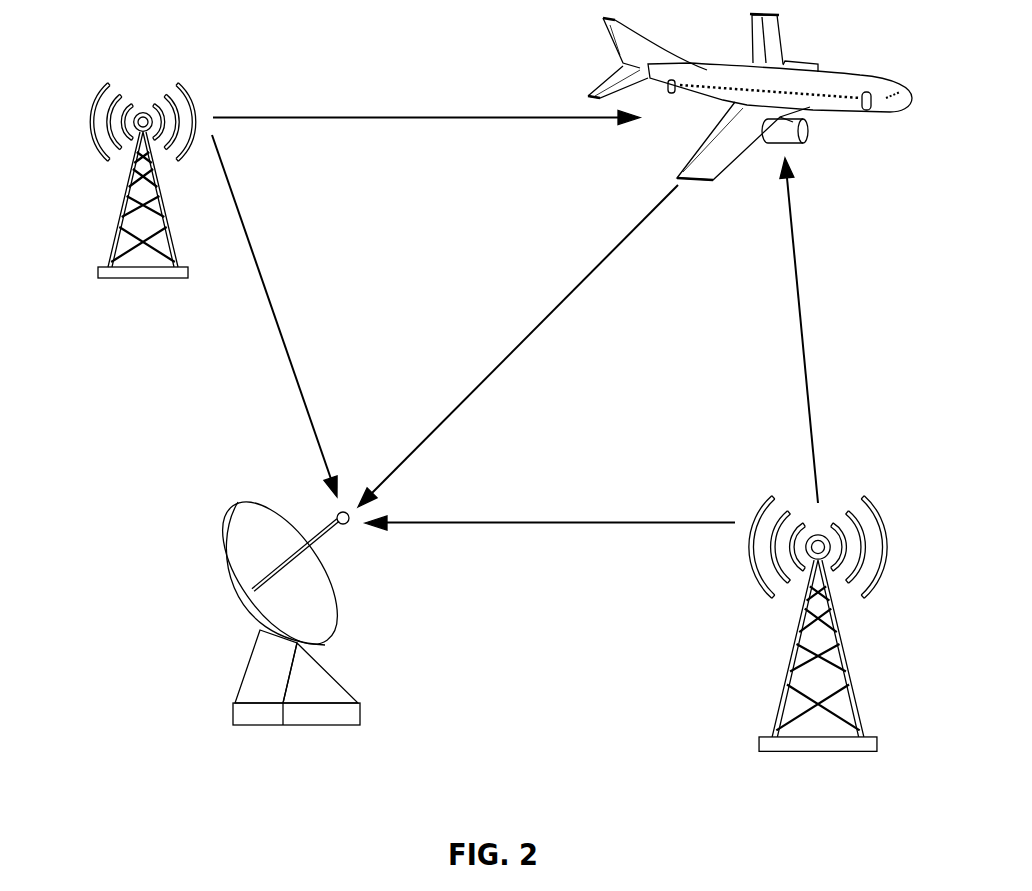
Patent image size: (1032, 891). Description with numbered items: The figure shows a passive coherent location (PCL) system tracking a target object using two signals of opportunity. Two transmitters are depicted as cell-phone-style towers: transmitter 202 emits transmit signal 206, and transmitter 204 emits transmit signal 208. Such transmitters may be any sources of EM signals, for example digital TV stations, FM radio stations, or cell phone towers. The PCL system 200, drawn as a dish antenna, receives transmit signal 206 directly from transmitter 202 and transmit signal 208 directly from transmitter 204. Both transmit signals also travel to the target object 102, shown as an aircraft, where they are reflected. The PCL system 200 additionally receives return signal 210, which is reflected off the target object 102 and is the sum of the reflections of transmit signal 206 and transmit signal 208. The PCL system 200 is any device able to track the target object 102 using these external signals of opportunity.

The target object 102 is at (858, 73).
The PCL system 200 is at (232, 502).
The transmitter 202 is at (108, 84).
The transmitter 204 is at (775, 500).
The transmit signal 206 is at (283, 155).
The transmit signal 208 is at (773, 446).
The return signal 210 is at (442, 404).